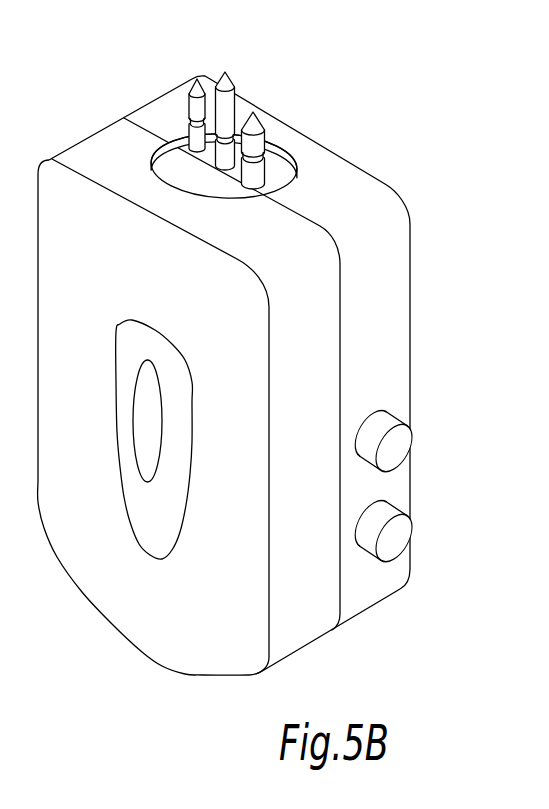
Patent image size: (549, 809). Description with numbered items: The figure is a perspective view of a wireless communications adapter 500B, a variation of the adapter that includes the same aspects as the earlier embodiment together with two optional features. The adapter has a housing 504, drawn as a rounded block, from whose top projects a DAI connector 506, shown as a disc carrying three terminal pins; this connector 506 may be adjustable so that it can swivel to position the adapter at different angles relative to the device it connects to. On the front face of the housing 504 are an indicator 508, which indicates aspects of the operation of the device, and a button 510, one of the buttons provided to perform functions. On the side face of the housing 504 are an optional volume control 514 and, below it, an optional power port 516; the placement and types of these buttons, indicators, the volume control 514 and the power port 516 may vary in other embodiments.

The wireless communications adapter 500B is at (256, 354).
The housing 504 is at (407, 343).
The DAI connector 506 is at (284, 167).
The indicator 508 is at (130, 407).
The button 510 is at (133, 497).
The volume control 514 is at (394, 448).
The power port 516 is at (394, 538).